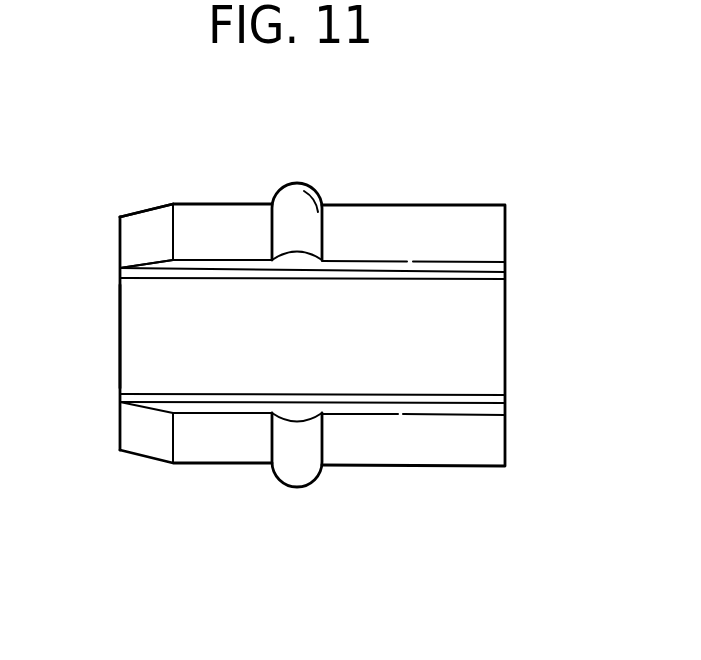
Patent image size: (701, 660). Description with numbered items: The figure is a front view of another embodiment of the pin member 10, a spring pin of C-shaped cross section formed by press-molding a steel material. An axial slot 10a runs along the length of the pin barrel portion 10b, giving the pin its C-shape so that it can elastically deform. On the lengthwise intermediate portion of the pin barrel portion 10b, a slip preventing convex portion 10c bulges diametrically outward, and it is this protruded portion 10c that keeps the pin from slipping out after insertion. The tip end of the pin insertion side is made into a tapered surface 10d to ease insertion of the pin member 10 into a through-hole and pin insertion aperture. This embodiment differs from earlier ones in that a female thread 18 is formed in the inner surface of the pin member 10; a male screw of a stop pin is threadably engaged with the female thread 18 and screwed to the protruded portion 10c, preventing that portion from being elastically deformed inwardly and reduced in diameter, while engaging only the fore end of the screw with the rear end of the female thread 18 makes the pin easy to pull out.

The pin member 10 is at (455, 170).
The slot 10a is at (178, 352).
The pin barrel portion 10b is at (420, 467).
The slip preventing convex portion 10c is at (295, 184).
The tapered surface 10d is at (148, 213).
The female thread 18 is at (478, 279).